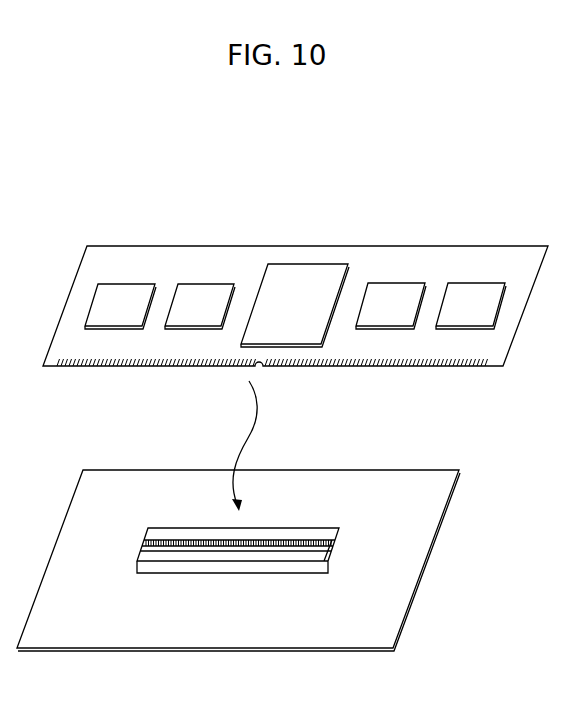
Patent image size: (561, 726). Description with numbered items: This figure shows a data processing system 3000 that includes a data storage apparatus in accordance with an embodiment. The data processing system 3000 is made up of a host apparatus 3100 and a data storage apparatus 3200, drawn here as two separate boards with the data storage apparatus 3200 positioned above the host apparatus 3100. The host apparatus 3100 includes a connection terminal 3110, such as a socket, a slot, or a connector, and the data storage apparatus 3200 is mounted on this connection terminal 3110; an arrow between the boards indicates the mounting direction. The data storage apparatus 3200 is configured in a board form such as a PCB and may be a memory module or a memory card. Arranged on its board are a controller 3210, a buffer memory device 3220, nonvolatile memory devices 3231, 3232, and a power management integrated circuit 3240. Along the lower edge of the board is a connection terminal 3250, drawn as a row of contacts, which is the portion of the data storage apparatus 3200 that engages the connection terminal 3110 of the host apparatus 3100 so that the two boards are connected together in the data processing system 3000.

The data processing system 3000 is at (153, 212).
The data storage apparatus 3200 is at (295, 306).
The controller 3210 is at (295, 305).
The buffer memory device 3220 is at (200, 306).
The power management integrated circuit 3240 is at (120, 306).
The nonvolatile memory device 3231 is at (391, 306).
The nonvolatile memory device 3232 is at (471, 306).
The connection terminal 3250 is at (73, 367).
The host apparatus 3100 is at (238, 560).
The connection terminal 3110 is at (339, 530).